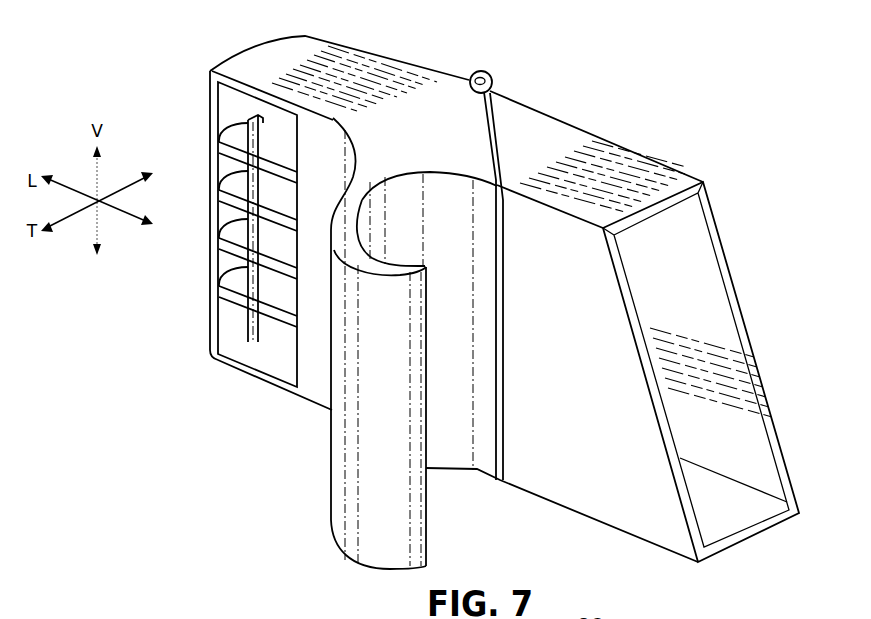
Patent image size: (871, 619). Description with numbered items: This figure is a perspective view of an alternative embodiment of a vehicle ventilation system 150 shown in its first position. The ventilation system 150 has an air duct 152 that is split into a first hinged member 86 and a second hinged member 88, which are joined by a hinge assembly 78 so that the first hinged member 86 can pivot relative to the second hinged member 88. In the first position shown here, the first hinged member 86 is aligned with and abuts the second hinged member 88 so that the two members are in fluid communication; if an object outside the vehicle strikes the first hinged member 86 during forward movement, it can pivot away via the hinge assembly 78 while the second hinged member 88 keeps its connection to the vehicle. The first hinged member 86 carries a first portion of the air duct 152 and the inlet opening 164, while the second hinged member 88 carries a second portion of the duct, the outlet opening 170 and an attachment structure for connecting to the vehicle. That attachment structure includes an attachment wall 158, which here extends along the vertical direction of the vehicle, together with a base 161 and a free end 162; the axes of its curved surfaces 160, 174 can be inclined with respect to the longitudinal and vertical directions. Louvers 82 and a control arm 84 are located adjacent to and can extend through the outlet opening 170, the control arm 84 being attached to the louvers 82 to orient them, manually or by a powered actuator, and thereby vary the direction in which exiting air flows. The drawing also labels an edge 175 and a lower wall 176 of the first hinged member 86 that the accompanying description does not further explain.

The pivot pin 78 is at (491, 73).
The shelf rib 82 is at (233, 240).
The post 84 is at (248, 314).
The top plate 86 is at (665, 165).
The upper surface 88 is at (417, 64).
The clip assembly 150 is at (240, 499).
The hook body 152 is at (525, 93).
The hook recess 158 is at (370, 257).
The rear wall 160 is at (446, 462).
The curved surface 161 is at (370, 176).
The side edge 162 is at (428, 407).
The frame 164 is at (771, 427).
The housing wall 170 is at (228, 100).
The cylindrical post 174 is at (353, 487).
The bottom edge 175 is at (615, 517).
The lower wall 176 is at (766, 473).